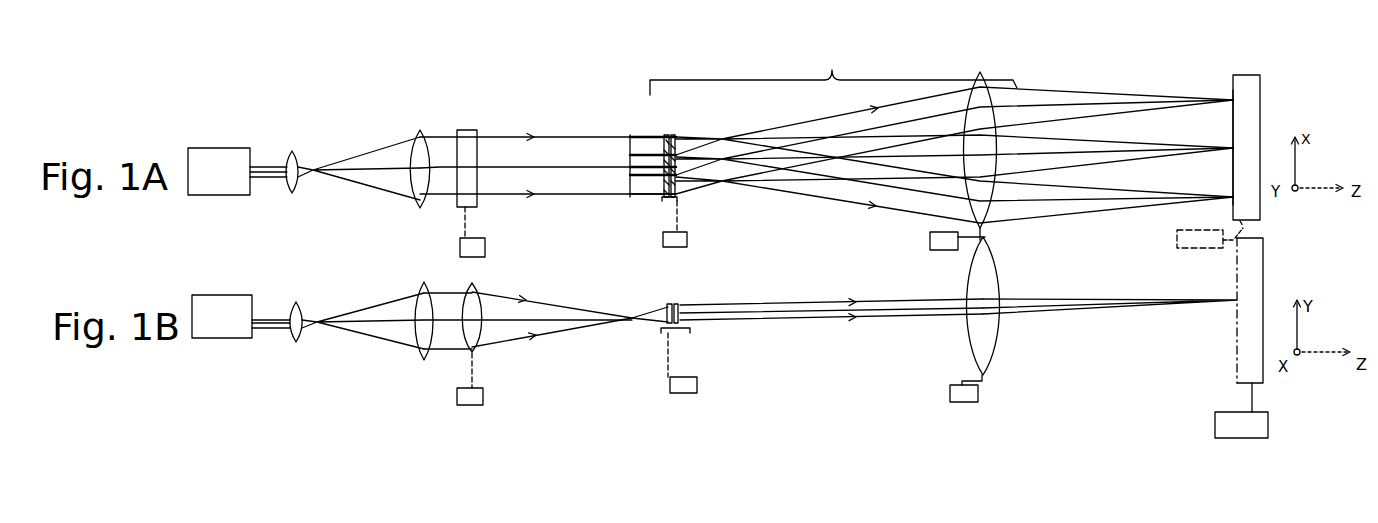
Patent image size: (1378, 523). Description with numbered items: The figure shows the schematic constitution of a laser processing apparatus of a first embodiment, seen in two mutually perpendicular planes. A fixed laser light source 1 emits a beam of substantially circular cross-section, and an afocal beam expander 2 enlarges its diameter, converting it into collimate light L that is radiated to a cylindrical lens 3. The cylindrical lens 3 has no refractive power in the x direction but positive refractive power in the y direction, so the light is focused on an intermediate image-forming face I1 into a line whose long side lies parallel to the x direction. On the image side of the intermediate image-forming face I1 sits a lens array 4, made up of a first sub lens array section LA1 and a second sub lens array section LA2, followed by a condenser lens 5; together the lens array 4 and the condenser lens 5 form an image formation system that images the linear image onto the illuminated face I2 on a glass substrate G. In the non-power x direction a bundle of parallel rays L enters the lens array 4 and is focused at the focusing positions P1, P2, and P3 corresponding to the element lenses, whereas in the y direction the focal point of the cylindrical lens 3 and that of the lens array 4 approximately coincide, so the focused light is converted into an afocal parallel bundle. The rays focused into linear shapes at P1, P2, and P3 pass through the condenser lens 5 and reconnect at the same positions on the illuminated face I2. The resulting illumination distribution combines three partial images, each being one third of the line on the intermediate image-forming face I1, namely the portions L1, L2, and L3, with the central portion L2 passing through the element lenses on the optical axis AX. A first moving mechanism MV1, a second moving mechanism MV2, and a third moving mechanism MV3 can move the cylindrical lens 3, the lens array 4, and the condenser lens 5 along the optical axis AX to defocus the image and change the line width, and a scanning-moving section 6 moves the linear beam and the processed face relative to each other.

In FIG. 1A, the laser light source 1 is at (220, 158).
In FIG. 1B, the laser light source 1 is at (240, 338).
In FIG. 1A, the afocal beam expander 2 is at (283, 132).
In FIG. 1B, the afocal beam expander 2 is at (438, 368).
In FIG. 1A, the cylindrical lens 3 is at (470, 128).
In FIG. 1B, the cylindrical lens 3 is at (478, 350).
In FIG. 1A, the lens array 4 is at (669, 211).
In FIG. 1B, the lens array 4 is at (678, 330).
In FIG. 1A, the condenser lens 5 is at (983, 56).
In FIG. 1B, the condenser lens 5 is at (985, 376).
In FIG. 1A, the scanning-moving section 6 is at (1175, 241).
In FIG. 1B, the scanning-moving section 6 is at (1207, 425).
In FIG. 1A, the collimate light L is at (441, 135).
In FIG. 1A, the one-third of the linear image L1 is at (645, 137).
In FIG. 1A, the one-third of the linear image L2 is at (618, 170).
In FIG. 1A, the one-third of the linear image L3 is at (647, 187).
In FIG. 1A, the intermediate image-forming face I1 is at (630, 135).
In FIG. 1A, the illuminated face I2 is at (1230, 88).
In FIG. 1A, the first sub lens array section LA1 is at (667, 134).
In FIG. 1A, the second sub lens array section LA2 is at (675, 137).
In FIG. 1A, the focusing position P1 is at (722, 137).
In FIG. 1A, the focusing position P2 is at (716, 168).
In FIG. 1A, the focusing position P3 is at (716, 183).
In FIG. 1A, the optical axis AX is at (590, 168).
In FIG. 1B, the optical axis AX is at (553, 320).
In FIG. 1A, the first moving mechanism MV1 is at (473, 257).
In FIG. 1B, the first moving mechanism MV1 is at (467, 405).
In FIG. 1A, the second moving mechanism MV2 is at (677, 247).
In FIG. 1B, the second moving mechanism MV2 is at (683, 393).
In FIG. 1A, the third moving mechanism MV3 is at (950, 250).
In FIG. 1B, the third moving mechanism MV3 is at (975, 402).
In FIG. 1A, the glass substrate G is at (1243, 77).
In FIG. 1B, the glass substrate G is at (1250, 310).